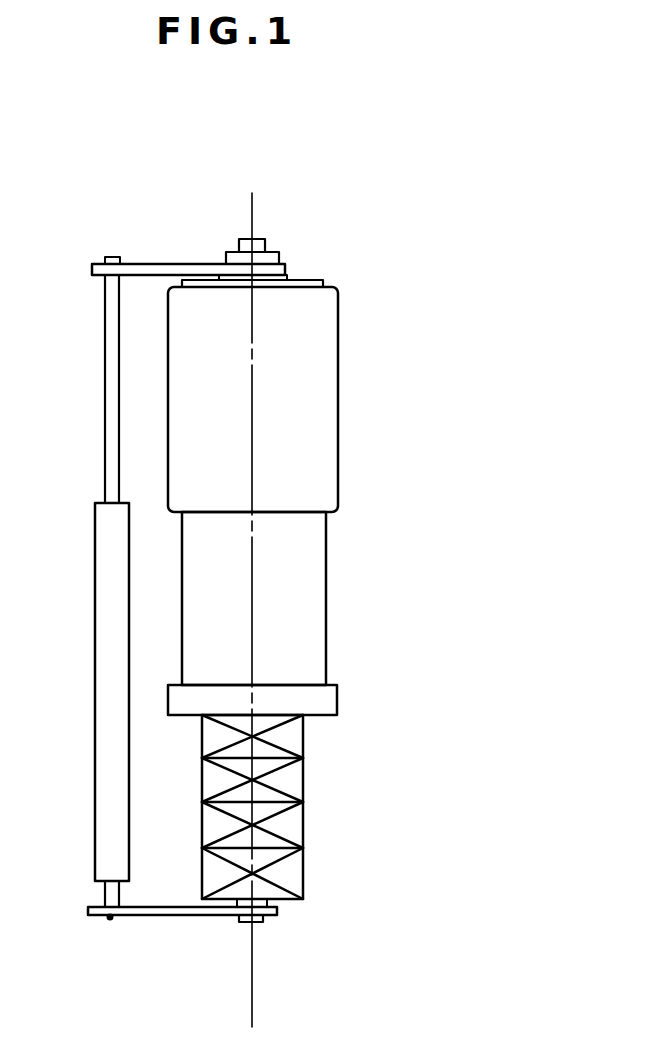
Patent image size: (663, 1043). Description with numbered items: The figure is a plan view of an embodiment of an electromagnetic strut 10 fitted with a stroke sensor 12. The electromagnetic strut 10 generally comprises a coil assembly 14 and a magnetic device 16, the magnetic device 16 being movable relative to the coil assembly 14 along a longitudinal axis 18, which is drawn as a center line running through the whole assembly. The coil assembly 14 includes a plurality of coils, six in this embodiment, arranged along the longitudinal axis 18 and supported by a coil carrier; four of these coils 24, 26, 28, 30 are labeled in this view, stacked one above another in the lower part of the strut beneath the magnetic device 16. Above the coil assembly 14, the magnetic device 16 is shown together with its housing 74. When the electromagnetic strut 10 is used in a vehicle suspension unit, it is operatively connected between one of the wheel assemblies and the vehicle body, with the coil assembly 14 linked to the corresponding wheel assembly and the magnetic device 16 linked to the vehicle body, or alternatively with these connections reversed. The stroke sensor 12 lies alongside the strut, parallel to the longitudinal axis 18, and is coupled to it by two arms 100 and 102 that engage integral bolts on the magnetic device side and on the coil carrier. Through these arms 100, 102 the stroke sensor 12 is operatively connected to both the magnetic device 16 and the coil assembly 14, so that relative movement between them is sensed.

The electromagnetic strut 10 is at (360, 309).
The stroke sensor 12 is at (95, 568).
The coil assembly 14 is at (303, 815).
The magnetic device 16 is at (318, 542).
The longitudinal axis 18 is at (252, 207).
The coil 24 is at (202, 737).
The coil 26 is at (202, 780).
The coil 28 is at (202, 828).
The coil 30 is at (202, 875).
The housing 74 is at (339, 392).
The arm 100 is at (165, 264).
The arm 102 is at (143, 917).